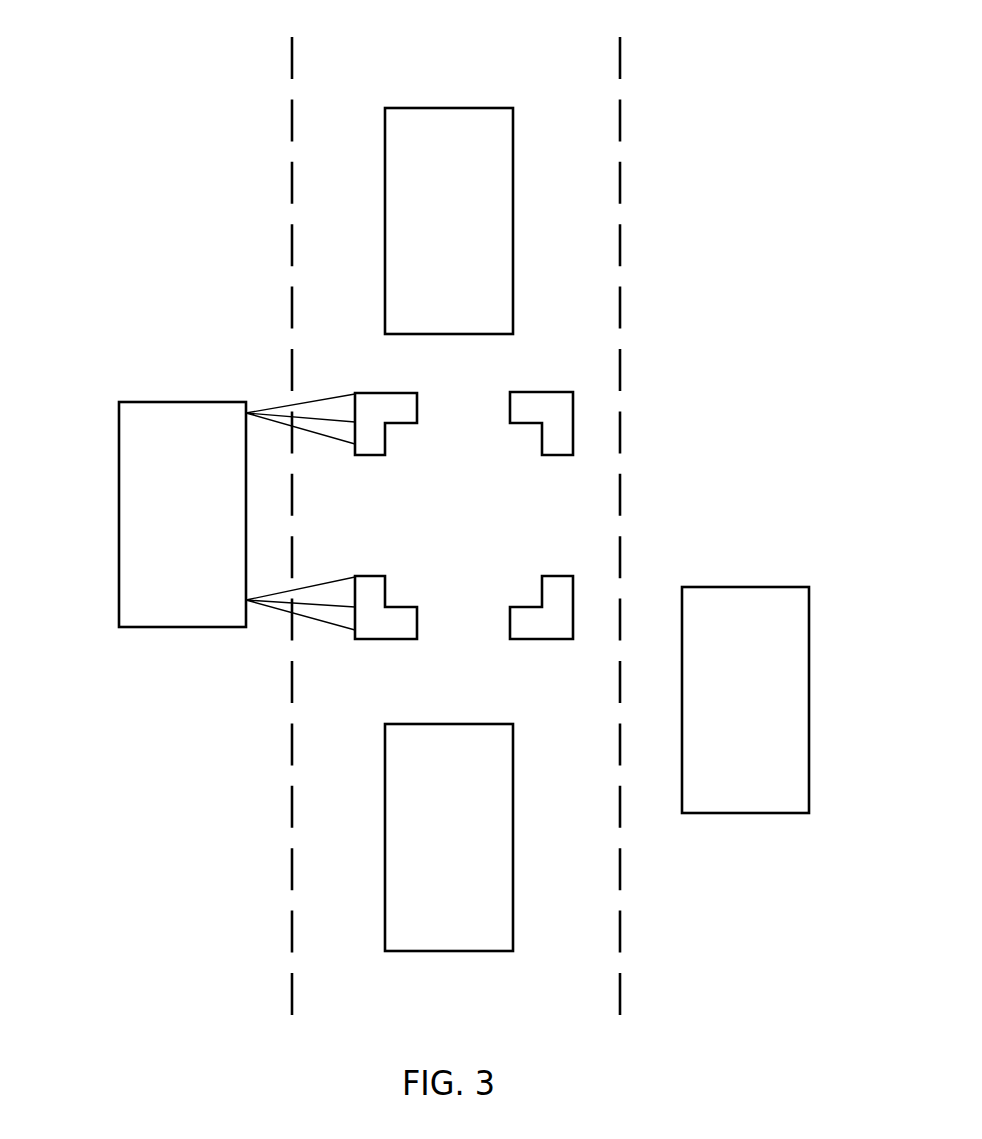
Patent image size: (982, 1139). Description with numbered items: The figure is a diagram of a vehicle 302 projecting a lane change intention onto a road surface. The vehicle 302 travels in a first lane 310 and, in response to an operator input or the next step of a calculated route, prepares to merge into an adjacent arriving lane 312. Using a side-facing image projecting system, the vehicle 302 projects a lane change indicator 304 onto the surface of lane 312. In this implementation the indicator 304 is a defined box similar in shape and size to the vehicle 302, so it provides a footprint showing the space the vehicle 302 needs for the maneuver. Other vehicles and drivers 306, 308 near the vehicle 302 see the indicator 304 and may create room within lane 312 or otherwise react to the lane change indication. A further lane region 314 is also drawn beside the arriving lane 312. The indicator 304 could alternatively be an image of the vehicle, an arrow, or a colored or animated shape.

The vehicle 302 is at (122, 459).
The lane change indicator 304 is at (464, 496).
The other vehicle 306 is at (383, 835).
The other vehicle 308 is at (808, 607).
The first lane 310 is at (202, 512).
The arriving lane 312 is at (449, 173).
The third region 314 is at (687, 516).